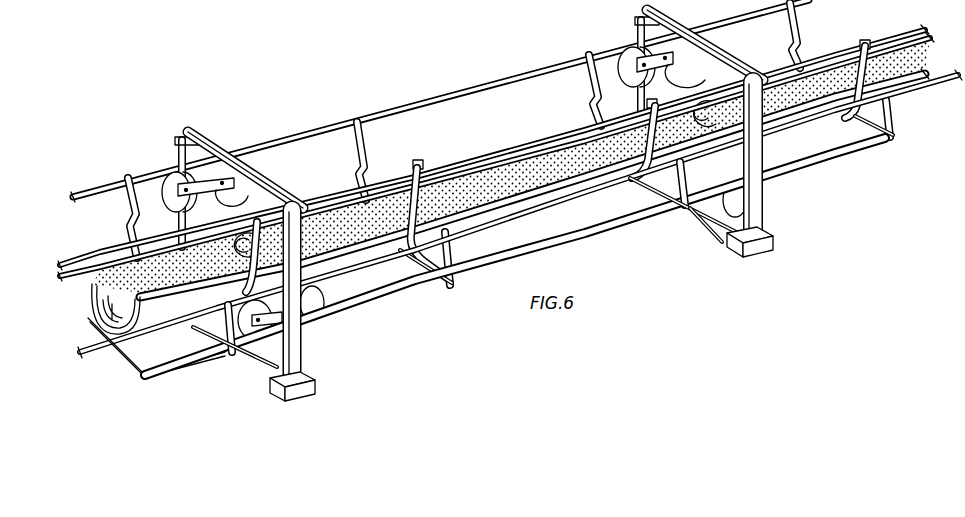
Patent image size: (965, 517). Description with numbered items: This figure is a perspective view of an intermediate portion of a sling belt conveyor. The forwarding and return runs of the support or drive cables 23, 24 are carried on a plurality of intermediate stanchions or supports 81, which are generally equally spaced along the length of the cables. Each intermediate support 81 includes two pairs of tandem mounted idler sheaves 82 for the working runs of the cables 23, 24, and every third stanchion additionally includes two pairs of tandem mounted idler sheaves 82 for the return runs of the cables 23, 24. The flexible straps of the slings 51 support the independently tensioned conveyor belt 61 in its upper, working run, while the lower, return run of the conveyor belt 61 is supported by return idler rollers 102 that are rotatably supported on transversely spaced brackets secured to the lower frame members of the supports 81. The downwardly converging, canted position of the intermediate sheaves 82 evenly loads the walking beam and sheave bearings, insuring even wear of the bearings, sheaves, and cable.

The support or drive cable 24 is at (467, 93).
The support or drive cable 23 is at (526, 146).
The sling 51 is at (132, 236).
The conveyor belt 61 is at (92, 331).
The intermediate stanchion or support 81 is at (807, 213).
The idler sheave 82 is at (772, 80).
The return idler roller 102 is at (263, 353).